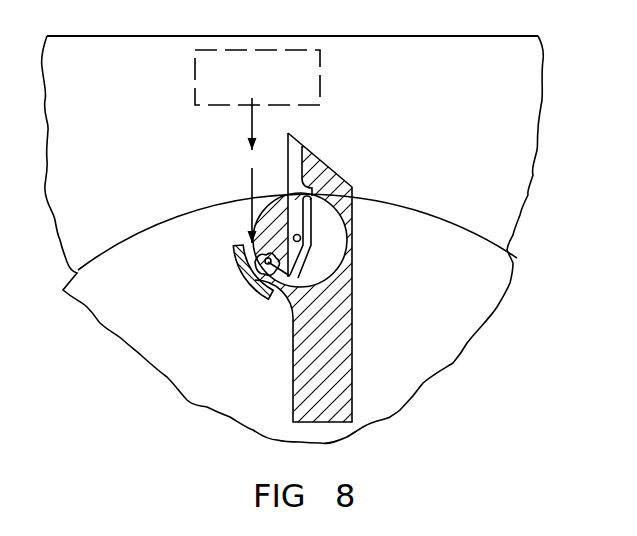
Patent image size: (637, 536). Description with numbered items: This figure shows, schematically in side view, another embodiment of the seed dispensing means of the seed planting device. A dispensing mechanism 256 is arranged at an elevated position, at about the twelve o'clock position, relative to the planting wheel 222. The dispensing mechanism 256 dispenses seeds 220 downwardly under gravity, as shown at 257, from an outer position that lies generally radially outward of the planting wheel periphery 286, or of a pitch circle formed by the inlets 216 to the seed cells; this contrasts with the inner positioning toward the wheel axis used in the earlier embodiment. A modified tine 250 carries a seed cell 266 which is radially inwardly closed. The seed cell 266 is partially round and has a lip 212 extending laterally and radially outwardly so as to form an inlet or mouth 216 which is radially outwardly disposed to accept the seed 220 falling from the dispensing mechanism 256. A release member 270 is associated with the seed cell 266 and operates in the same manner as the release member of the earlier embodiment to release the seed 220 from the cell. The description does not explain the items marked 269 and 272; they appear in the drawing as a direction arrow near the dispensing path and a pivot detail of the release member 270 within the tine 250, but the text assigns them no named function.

The lip 212 is at (247, 263).
The inlet or mouth 216 is at (240, 228).
The seed 220 is at (268, 280).
The planting wheel 222 is at (477, 176).
The modified tine 250 is at (365, 352).
The dispensing mechanism 256 is at (322, 80).
The downward seed path 257 is at (252, 182).
The seed cell 266 is at (337, 243).
The movement direction arrow 269 is at (284, 176).
The release member 270 is at (315, 227).
The pivot pin 272 is at (303, 263).
The planting wheel periphery 286 is at (470, 228).